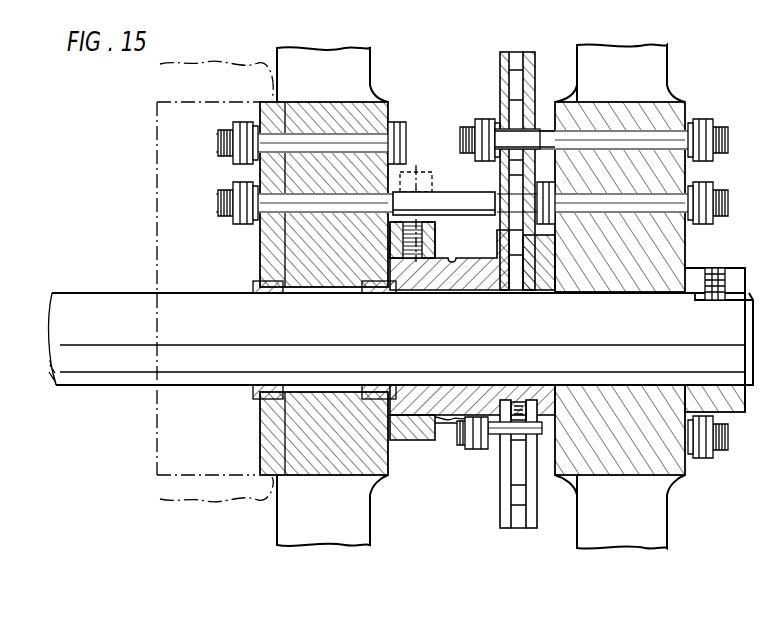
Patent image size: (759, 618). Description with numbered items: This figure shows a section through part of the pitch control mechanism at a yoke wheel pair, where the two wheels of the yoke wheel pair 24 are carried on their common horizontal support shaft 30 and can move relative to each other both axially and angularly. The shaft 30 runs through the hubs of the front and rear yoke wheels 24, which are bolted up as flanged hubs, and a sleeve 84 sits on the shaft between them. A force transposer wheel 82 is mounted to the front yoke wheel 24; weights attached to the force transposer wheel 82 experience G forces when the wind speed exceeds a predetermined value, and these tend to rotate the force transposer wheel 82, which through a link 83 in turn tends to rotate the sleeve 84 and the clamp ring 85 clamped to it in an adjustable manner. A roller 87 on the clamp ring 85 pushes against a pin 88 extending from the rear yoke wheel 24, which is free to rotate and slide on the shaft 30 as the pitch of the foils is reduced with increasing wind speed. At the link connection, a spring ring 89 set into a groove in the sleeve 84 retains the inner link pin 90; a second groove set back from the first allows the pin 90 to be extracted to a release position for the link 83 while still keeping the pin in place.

The yoke wheel 24 is at (258, 258).
The shaft 30 is at (73, 300).
The force transposer wheel 82 is at (532, 52).
The link 83 is at (510, 445).
The sleeve 84 is at (462, 420).
The clamp ring 85 is at (452, 222).
The roller 87 is at (414, 176).
The pin 88 is at (432, 196).
The spring ring 89 is at (478, 258).
The inner link pin 90 is at (520, 440).